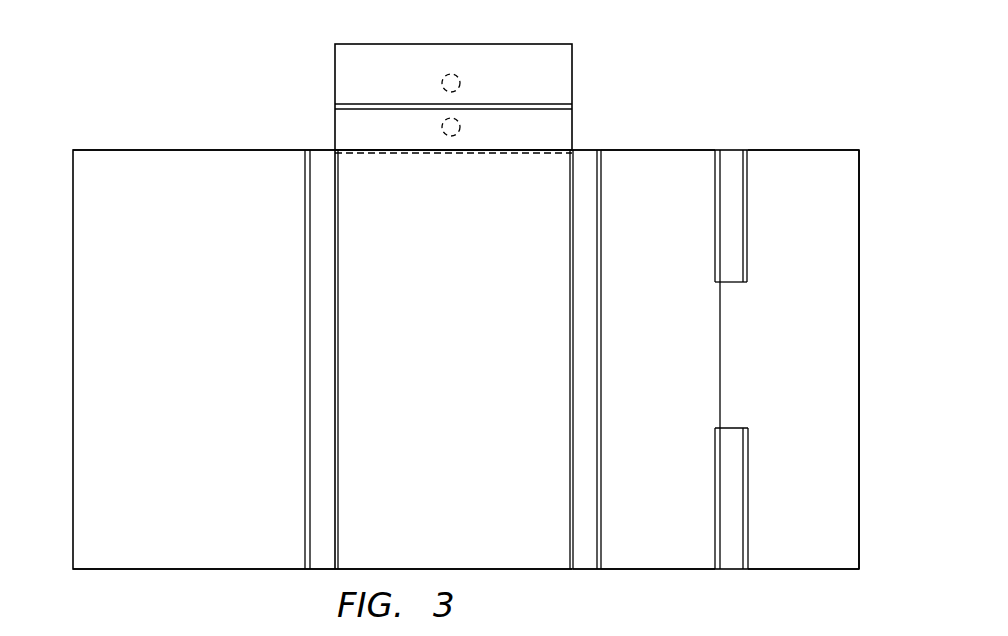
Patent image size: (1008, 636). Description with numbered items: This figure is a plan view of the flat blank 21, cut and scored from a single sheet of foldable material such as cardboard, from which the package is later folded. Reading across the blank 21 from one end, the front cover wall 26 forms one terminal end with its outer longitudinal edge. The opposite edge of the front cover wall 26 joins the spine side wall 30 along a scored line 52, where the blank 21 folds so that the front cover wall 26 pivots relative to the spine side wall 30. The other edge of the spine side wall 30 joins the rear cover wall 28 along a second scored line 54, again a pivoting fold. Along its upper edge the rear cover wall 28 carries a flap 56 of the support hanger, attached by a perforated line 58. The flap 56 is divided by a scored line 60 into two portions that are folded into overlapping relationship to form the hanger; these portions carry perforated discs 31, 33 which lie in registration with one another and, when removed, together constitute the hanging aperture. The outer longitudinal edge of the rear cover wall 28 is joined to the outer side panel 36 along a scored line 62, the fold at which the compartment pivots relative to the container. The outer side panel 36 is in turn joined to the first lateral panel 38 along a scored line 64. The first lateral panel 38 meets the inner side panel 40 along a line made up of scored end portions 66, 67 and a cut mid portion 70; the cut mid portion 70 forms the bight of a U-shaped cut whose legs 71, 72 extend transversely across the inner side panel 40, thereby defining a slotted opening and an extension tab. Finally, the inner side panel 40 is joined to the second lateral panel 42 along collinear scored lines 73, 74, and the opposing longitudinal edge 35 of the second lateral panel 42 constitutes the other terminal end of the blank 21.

The blank 21 is at (158, 121).
The front cover wall 26 is at (221, 160).
The rear cover wall 28 is at (555, 172).
The spine side wall 30 is at (322, 150).
The perforated disc 31 is at (450, 73).
The perforated disc 33 is at (445, 137).
The longitudinal edge 35 is at (860, 208).
The outer side panel 36 is at (587, 175).
The first lateral panel 38 is at (698, 165).
The inner side panel 40 is at (732, 166).
The second lateral panel 42 is at (817, 160).
The scored line 52 is at (306, 334).
The scored line 54 is at (337, 330).
The flap 56 is at (562, 122).
The perforated line 58 is at (505, 150).
The scored line 60 is at (517, 107).
The scored line 62 is at (572, 288).
The scored line 64 is at (598, 278).
The scored end portion 66 is at (718, 218).
The scored end portion 67 is at (716, 462).
The cut mid portion 70 is at (718, 352).
The leg 71 is at (733, 428).
The leg 72 is at (732, 283).
The scored line 73 is at (748, 461).
The scored line 74 is at (745, 217).